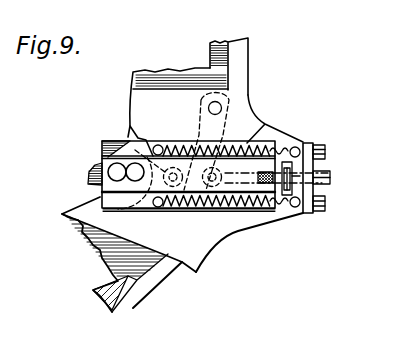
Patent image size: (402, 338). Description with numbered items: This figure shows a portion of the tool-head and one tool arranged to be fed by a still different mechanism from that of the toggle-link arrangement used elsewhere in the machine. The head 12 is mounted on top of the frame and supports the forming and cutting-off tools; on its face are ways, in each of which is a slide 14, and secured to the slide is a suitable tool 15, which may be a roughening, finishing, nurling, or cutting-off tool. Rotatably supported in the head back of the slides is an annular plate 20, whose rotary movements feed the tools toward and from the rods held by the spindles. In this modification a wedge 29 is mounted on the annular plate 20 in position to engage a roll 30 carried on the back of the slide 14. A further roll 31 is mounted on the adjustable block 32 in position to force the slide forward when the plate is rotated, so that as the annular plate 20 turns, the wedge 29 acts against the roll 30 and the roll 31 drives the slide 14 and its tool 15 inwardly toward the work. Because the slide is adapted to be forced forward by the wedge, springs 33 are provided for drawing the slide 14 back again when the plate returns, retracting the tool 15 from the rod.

The head 12 is at (249, 50).
The slide 14 is at (265, 124).
The tool 15 is at (97, 170).
The annular plate 20 is at (103, 259).
The wedge 29 is at (199, 118).
The roll 30 is at (129, 127).
The roll 31 is at (203, 209).
The adjustable block 32 is at (290, 209).
The springs 33 is at (249, 142).